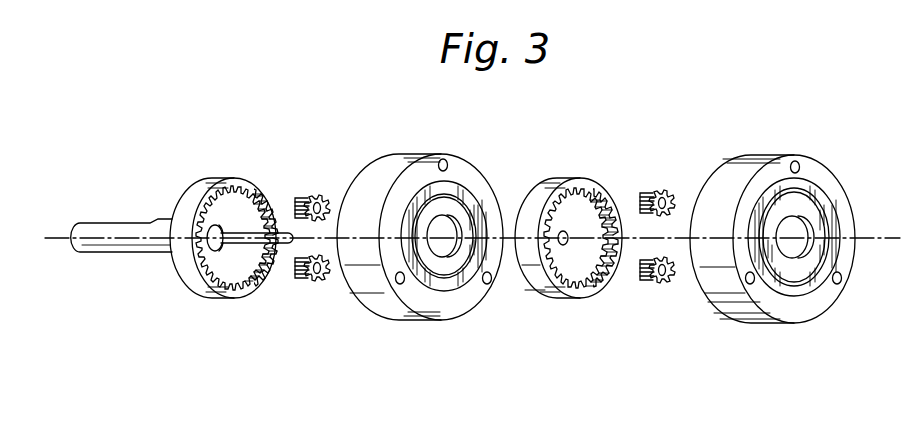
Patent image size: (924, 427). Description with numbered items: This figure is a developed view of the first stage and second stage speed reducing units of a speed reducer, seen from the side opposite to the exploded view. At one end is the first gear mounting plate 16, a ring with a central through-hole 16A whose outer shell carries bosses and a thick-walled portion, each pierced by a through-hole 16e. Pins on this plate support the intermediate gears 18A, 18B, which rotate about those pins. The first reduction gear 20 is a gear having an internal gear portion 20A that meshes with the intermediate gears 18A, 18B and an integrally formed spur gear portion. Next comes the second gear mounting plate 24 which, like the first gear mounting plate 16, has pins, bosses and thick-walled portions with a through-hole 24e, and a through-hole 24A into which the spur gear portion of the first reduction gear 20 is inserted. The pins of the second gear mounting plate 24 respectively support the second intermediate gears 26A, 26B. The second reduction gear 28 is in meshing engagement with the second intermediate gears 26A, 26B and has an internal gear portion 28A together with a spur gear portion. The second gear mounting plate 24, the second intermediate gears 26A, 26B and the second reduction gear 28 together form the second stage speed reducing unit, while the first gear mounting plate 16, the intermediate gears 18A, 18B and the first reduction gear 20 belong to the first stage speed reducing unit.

The first gear mounting plate 16 is at (806, 310).
The central through-hole 16A is at (798, 245).
The through-hole 16e is at (797, 162).
The intermediate gear 18A is at (657, 187).
The intermediate gear 18B is at (660, 288).
The first reduction gear 20 is at (550, 298).
The internal gear portion 20A is at (600, 295).
The second gear mounting plate 24 is at (363, 287).
The through-hole 24A is at (441, 245).
The through-hole 24e is at (446, 160).
The second intermediate gear 26A is at (313, 190).
The second intermediate gear 26B is at (312, 287).
The second reduction gear 28 is at (200, 295).
The internal gear portion 28A is at (248, 297).